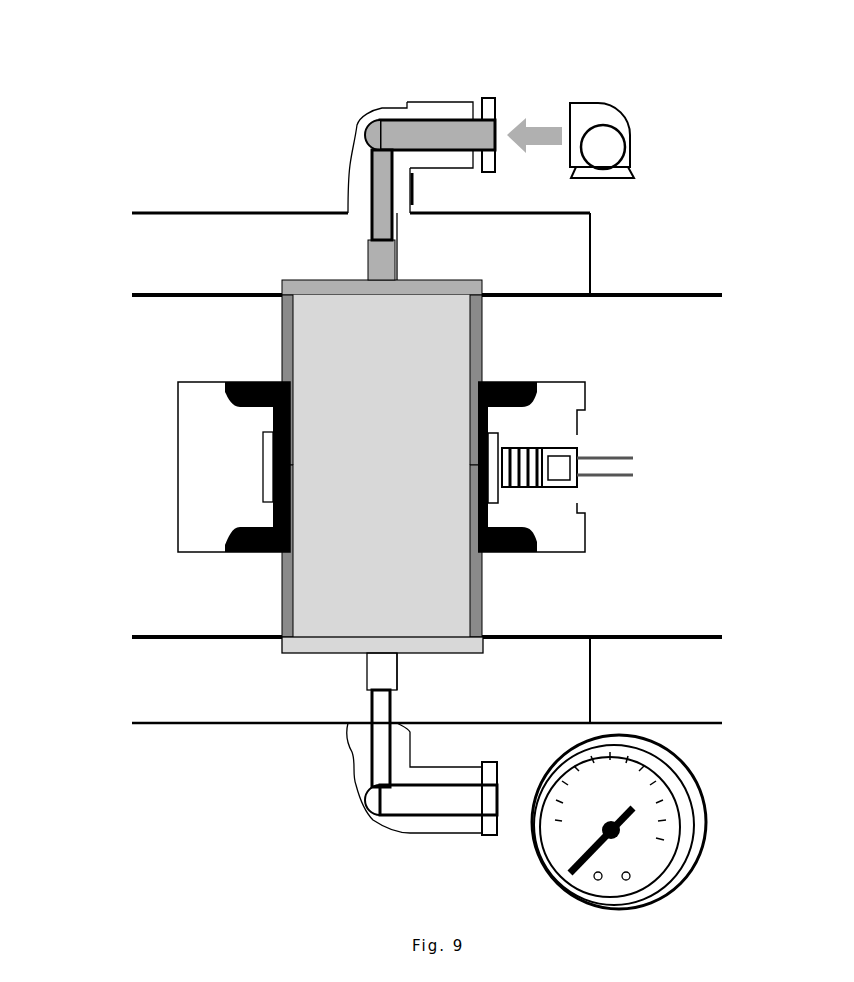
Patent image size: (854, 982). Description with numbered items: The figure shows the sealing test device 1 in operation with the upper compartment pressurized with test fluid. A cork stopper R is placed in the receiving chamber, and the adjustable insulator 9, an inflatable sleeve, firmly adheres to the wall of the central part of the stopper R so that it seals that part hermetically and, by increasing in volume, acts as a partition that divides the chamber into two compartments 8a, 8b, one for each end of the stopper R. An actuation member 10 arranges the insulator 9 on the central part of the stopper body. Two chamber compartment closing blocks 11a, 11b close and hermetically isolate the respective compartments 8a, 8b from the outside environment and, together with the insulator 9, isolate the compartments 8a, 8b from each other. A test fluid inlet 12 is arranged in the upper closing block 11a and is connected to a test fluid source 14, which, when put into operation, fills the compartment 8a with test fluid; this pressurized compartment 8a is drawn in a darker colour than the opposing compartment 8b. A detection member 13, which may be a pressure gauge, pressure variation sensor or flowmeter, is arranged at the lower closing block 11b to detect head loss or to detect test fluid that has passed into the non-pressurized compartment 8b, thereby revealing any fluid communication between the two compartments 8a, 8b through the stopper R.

The sealing test device 1 is at (143, 82).
The compartment 8a is at (322, 280).
The compartment 8b is at (283, 583).
The adjustable insulator 9 is at (518, 383).
The actuation member 10 is at (537, 450).
The chamber compartment closing block 11a is at (565, 263).
The chamber compartment closing block 11b is at (560, 660).
The test fluid inlet 12 is at (500, 123).
The detection member 13 is at (686, 762).
The test fluid source 14 is at (630, 106).
The cork stopper R is at (397, 577).